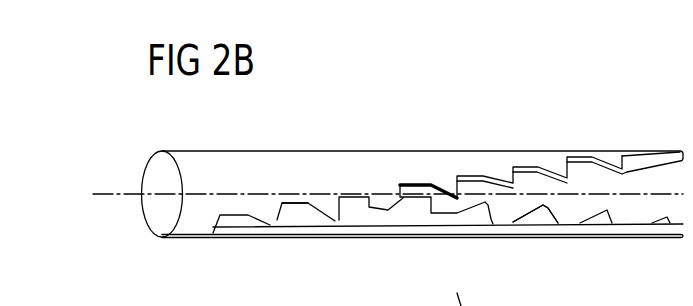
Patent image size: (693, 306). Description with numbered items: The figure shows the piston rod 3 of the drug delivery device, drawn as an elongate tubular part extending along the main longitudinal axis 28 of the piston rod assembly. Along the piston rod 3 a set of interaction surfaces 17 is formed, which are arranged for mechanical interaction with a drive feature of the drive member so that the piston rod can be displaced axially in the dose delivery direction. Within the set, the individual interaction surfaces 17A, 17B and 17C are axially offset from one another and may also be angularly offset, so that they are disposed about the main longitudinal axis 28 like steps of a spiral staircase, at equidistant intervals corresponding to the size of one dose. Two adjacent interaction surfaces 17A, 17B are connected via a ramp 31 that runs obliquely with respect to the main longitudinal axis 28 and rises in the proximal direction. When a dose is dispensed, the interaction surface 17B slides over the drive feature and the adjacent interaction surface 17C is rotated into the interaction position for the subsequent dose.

The piston rod 3 is at (388, 168).
The main longitudinal axis 28 is at (110, 197).
The ramp 31 is at (290, 203).
The interaction surfaces 17 is at (490, 216).
The interaction surface 17A is at (285, 213).
The interaction surface 17B is at (340, 205).
The interaction surface 17C is at (418, 193).